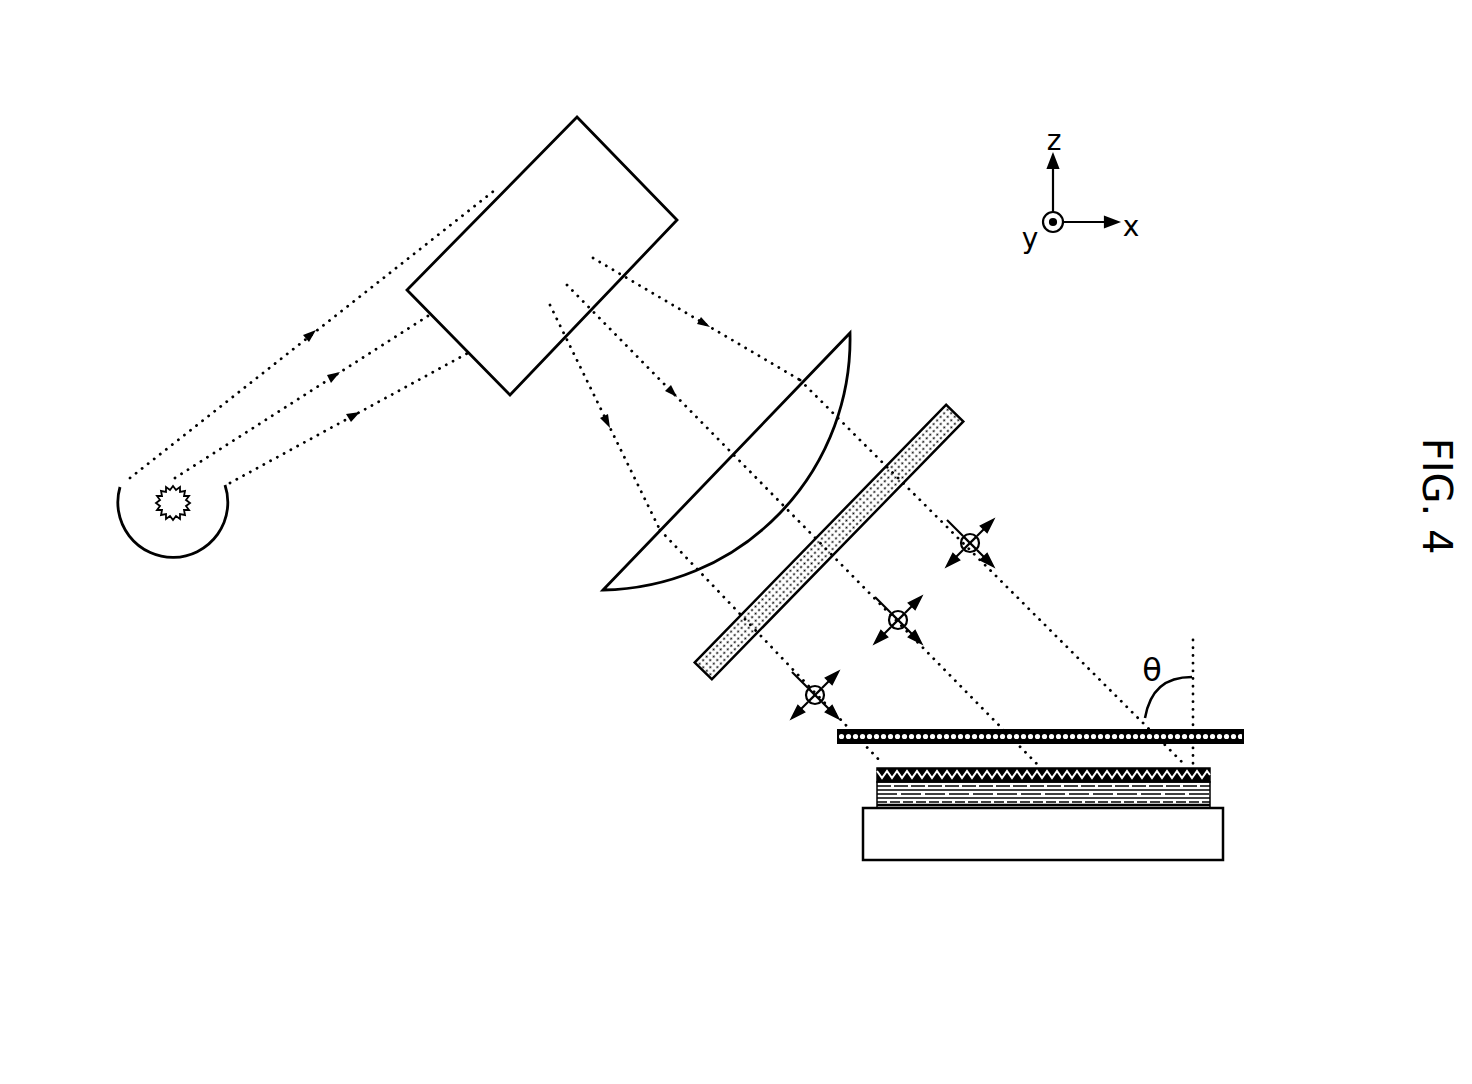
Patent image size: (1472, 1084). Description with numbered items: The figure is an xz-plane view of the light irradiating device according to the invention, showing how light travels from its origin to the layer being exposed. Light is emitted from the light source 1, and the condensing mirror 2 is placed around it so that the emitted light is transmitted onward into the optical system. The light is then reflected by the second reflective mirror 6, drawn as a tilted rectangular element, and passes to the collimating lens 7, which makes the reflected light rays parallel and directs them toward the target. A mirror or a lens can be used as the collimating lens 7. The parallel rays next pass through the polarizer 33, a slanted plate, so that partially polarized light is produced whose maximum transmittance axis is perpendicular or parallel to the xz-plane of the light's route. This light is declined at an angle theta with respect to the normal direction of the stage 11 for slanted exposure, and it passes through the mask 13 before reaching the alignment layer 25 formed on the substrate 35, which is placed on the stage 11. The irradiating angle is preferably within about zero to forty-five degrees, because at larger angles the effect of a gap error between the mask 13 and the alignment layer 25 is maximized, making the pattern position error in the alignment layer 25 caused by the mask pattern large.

The light source 1 is at (170, 507).
The condensing mirror 2 is at (223, 523).
The second reflective mirror 6 is at (613, 220).
The collimating lens 7 is at (654, 575).
The polarizer 33 is at (945, 411).
The mask 13 is at (1212, 730).
The alignment layer 25 is at (877, 772).
The substrate 35 is at (877, 795).
The stage 11 is at (873, 828).